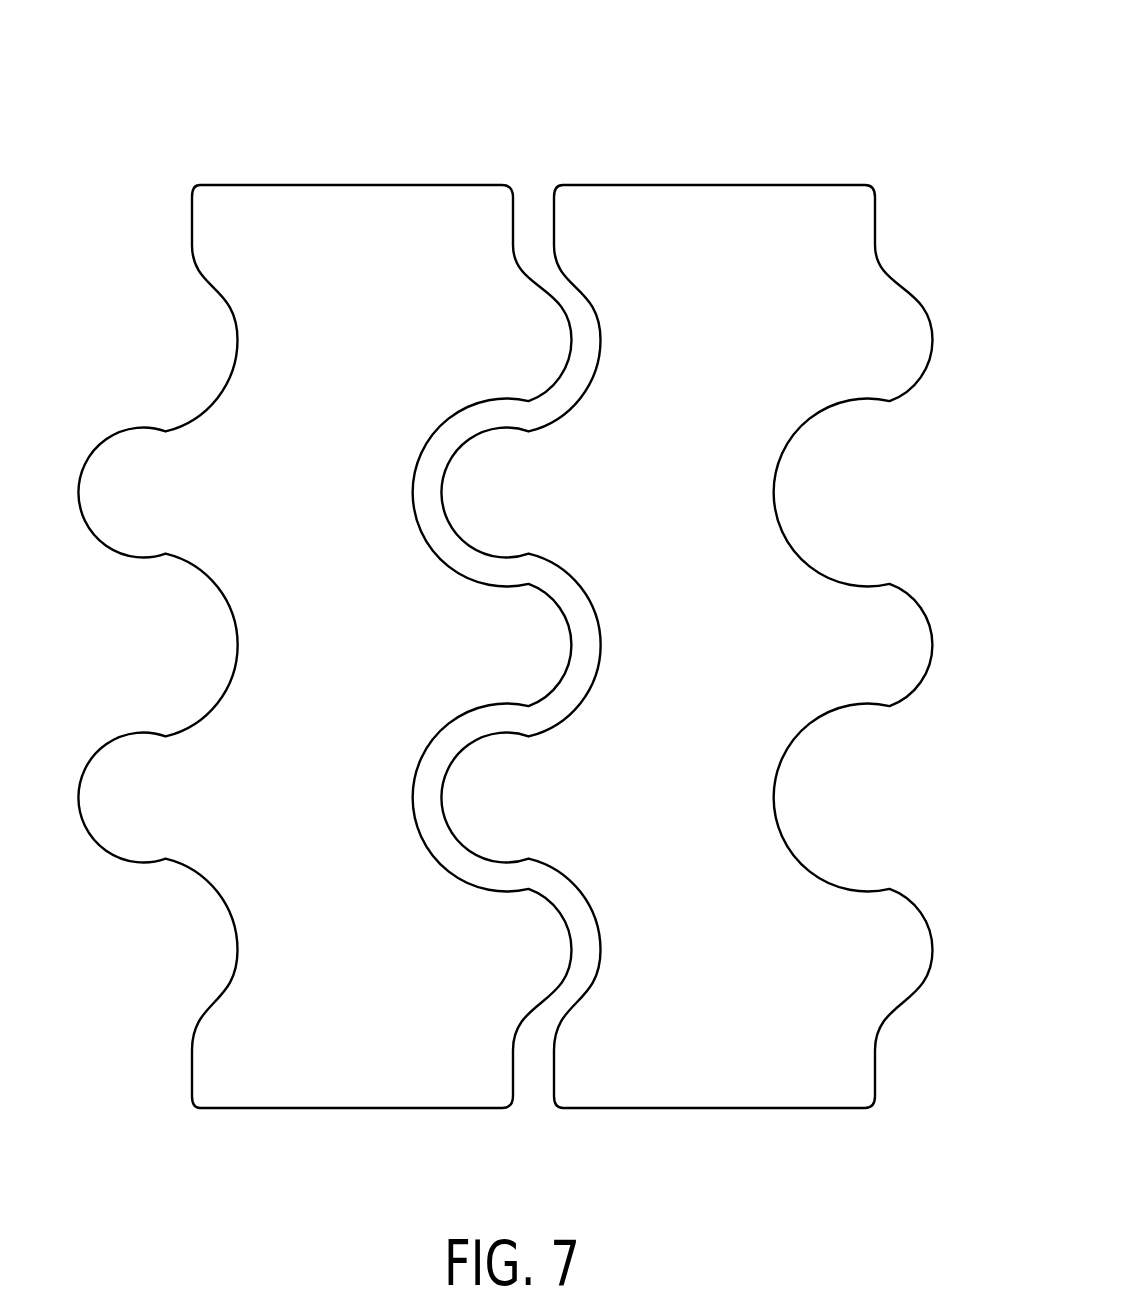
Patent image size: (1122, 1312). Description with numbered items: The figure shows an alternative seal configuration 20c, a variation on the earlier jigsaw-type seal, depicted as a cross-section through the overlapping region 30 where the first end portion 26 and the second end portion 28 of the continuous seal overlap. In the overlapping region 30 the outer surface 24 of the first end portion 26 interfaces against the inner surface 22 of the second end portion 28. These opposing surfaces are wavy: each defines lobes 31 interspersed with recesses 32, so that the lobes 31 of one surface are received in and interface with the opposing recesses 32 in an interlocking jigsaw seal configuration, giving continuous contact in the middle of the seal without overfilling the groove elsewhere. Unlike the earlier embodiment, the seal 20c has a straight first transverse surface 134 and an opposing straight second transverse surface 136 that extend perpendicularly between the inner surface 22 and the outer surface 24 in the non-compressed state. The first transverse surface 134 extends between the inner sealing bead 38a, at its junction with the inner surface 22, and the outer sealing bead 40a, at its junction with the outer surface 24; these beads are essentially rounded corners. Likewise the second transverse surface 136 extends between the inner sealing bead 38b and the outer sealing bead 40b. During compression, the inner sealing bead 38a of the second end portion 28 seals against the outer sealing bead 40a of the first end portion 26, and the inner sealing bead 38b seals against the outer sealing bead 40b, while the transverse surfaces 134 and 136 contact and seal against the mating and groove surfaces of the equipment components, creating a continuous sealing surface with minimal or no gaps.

The seal configuration 20c is at (905, 74).
The inner surface 22 is at (526, 200).
The outer surface 24 is at (193, 252).
The first end portion 26 is at (725, 992).
The second end portion 28 is at (372, 992).
The overlapping region 30 is at (526, 126).
The lobe 31 is at (567, 625).
The recess 32 is at (600, 640).
The inner sealing bead 38a is at (503, 185).
The inner sealing bead 38b is at (506, 1108).
The outer sealing bead 40a is at (199, 185).
The outer sealing bead 40b is at (202, 1108).
The first transverse surface 134 is at (334, 185).
The second transverse surface 136 is at (333, 1108).